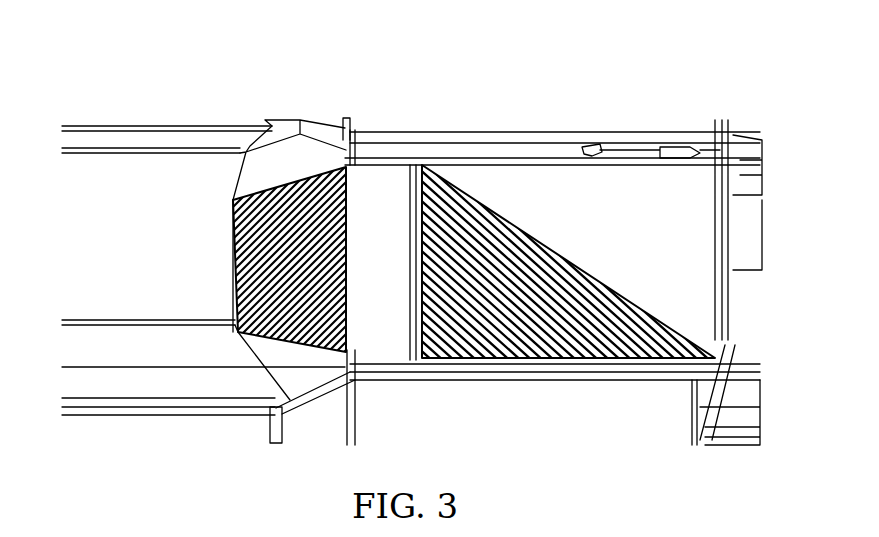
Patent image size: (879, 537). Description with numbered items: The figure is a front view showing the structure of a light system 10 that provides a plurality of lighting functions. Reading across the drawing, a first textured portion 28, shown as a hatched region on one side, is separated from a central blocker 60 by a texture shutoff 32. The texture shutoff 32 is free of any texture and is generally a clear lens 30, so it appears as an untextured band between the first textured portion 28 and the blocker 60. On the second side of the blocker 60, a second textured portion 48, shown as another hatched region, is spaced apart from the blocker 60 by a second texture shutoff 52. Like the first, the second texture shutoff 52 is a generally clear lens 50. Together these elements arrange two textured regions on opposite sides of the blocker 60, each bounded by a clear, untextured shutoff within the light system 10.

The light system 10 is at (630, 95).
The first textured portion 28 is at (497, 228).
The clear lens 30 is at (428, 342).
The texture shutoff 32 is at (412, 165).
The second textured portion 48 is at (268, 203).
The clear lens 50 is at (312, 345).
The second texture shutoff 52 is at (348, 162).
The blocker 60 is at (390, 190).